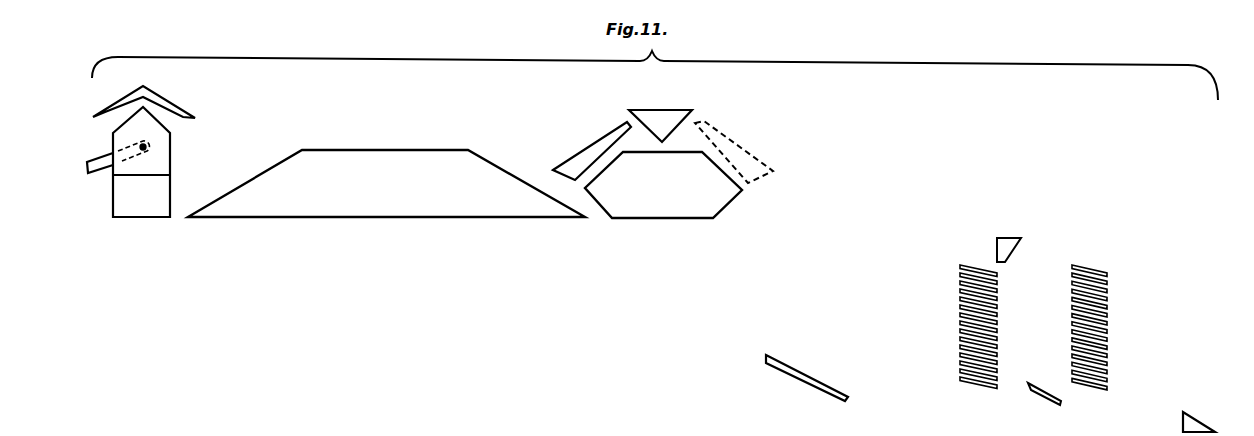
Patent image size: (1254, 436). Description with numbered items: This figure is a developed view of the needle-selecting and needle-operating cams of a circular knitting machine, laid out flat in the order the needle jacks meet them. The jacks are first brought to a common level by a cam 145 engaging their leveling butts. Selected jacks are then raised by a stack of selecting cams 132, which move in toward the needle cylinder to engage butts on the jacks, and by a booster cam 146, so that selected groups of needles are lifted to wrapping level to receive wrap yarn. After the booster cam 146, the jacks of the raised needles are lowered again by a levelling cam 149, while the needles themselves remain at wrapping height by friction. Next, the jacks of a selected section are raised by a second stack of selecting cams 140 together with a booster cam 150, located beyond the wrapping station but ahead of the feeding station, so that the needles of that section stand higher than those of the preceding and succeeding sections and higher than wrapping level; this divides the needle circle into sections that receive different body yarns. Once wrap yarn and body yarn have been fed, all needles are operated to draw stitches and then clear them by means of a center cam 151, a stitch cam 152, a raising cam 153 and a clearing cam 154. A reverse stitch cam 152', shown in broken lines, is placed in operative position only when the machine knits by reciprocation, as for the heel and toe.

The selecting cams 132 is at (1108, 291).
The selecting cams 140 is at (963, 308).
The cam 145 is at (1202, 420).
The booster cam 146 is at (1041, 397).
The levelling cam 149 is at (1013, 243).
The booster cam 150 is at (812, 375).
The center cam 151 is at (681, 101).
The stitch cam 152 is at (592, 151).
The reverse stitch cam 152' is at (740, 152).
The raising cam 153 is at (490, 163).
The clearing cam 154 is at (165, 133).